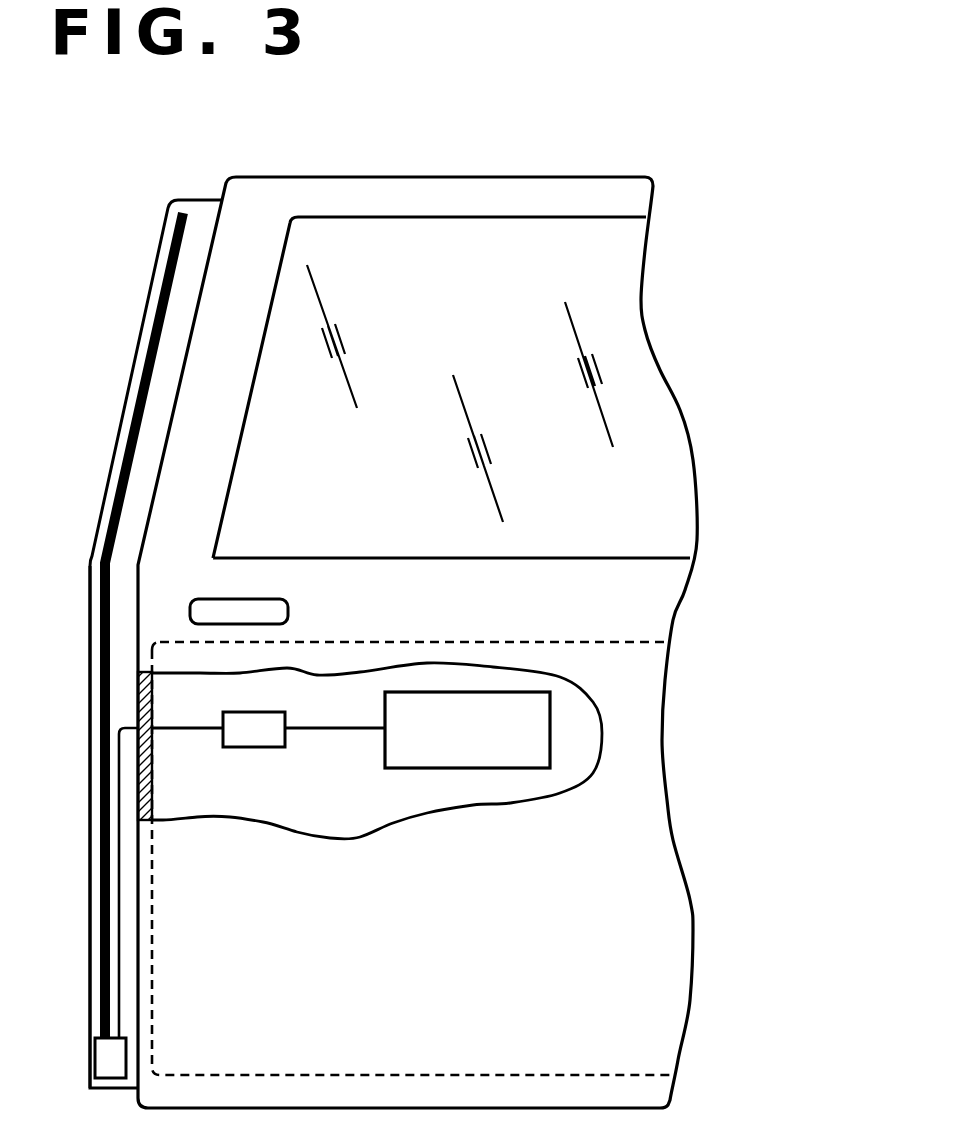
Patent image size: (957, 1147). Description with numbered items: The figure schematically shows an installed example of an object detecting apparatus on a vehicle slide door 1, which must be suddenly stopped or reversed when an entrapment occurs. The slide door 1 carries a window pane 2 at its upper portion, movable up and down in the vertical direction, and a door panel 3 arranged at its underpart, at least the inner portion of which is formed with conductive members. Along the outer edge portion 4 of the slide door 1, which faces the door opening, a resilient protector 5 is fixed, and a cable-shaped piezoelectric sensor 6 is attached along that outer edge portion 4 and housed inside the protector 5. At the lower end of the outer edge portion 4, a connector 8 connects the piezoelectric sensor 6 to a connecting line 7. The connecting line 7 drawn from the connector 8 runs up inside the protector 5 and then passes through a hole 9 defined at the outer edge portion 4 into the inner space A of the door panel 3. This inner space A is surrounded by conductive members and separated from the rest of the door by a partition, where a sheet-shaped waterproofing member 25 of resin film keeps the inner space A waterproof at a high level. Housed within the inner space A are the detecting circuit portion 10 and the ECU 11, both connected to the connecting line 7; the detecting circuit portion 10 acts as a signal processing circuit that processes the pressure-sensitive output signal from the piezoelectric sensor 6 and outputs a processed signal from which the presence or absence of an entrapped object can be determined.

The slide door 1 is at (724, 580).
The window pane 2 is at (597, 343).
The door panel 3 is at (667, 925).
The outer edge portion 4 is at (160, 450).
The protector 5 is at (88, 697).
The piezoelectric sensor 6 is at (100, 615).
The connecting line 7 is at (119, 920).
The connector 8 is at (103, 1062).
The hole 9 is at (150, 733).
The detecting circuit portion 10 is at (253, 747).
The ECU 11 is at (467, 760).
The waterproofing member 25 is at (628, 650).
The inner space A is at (354, 811).